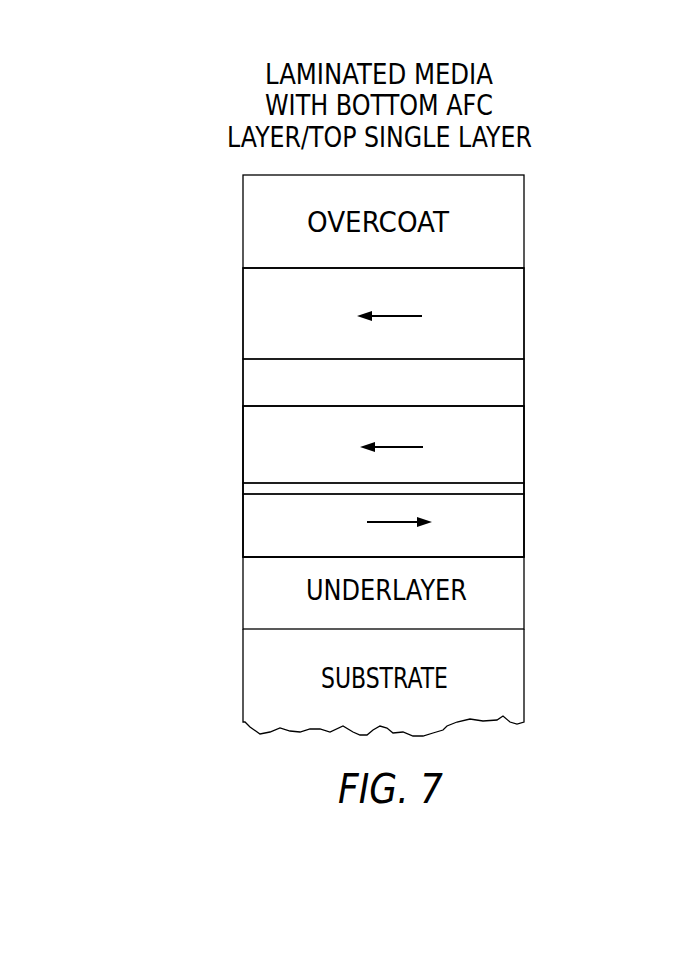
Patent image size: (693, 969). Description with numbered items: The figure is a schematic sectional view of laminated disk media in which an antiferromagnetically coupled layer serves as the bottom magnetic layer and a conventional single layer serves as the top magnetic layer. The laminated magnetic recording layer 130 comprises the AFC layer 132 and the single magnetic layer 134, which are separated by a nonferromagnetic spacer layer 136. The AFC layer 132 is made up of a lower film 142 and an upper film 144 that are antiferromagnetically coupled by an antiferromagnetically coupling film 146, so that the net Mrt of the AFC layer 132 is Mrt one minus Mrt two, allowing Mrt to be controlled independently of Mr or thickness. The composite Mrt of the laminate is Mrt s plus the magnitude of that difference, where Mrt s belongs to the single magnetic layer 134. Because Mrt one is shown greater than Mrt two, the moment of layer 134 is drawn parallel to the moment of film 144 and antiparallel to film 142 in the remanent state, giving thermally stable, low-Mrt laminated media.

The laminated magnetic recording layer 130 is at (152, 271).
The AFC layer 132 is at (231, 407).
The single magnetic layer 134 is at (233, 271).
The nonferromagnetic spacer layer 136 is at (513, 387).
The lower film 142 is at (517, 533).
The upper film 144 is at (513, 453).
The antiferromagnetically coupling film 146 is at (517, 487).